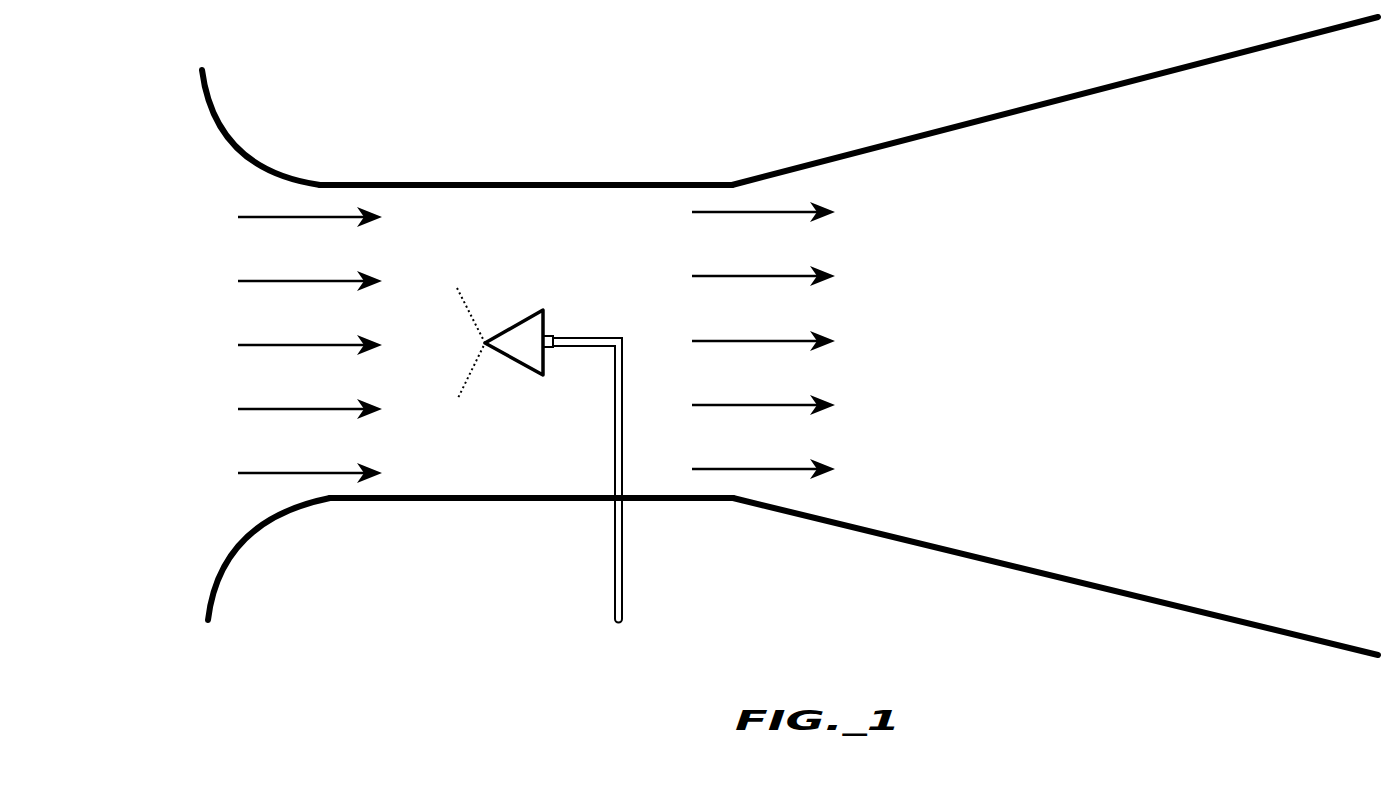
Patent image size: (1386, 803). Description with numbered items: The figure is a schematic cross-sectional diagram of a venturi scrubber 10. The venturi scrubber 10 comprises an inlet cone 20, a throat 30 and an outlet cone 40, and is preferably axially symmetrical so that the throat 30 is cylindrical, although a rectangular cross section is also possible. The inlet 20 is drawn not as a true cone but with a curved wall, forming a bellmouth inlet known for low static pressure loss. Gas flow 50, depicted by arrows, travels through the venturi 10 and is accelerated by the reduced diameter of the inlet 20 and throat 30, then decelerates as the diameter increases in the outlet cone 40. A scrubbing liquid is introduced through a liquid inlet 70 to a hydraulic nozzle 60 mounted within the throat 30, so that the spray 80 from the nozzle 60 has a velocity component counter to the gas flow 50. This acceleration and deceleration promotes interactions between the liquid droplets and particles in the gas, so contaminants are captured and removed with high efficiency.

The venturi scrubber 10 is at (790, 336).
The inlet cone 20 is at (247, 157).
The throat 30 is at (483, 183).
The outlet cone 40 is at (880, 143).
The gas flow 50 is at (245, 318).
The hydraulic nozzle 60 is at (532, 310).
The liquid inlet 70 is at (615, 555).
The spray 80 is at (472, 370).